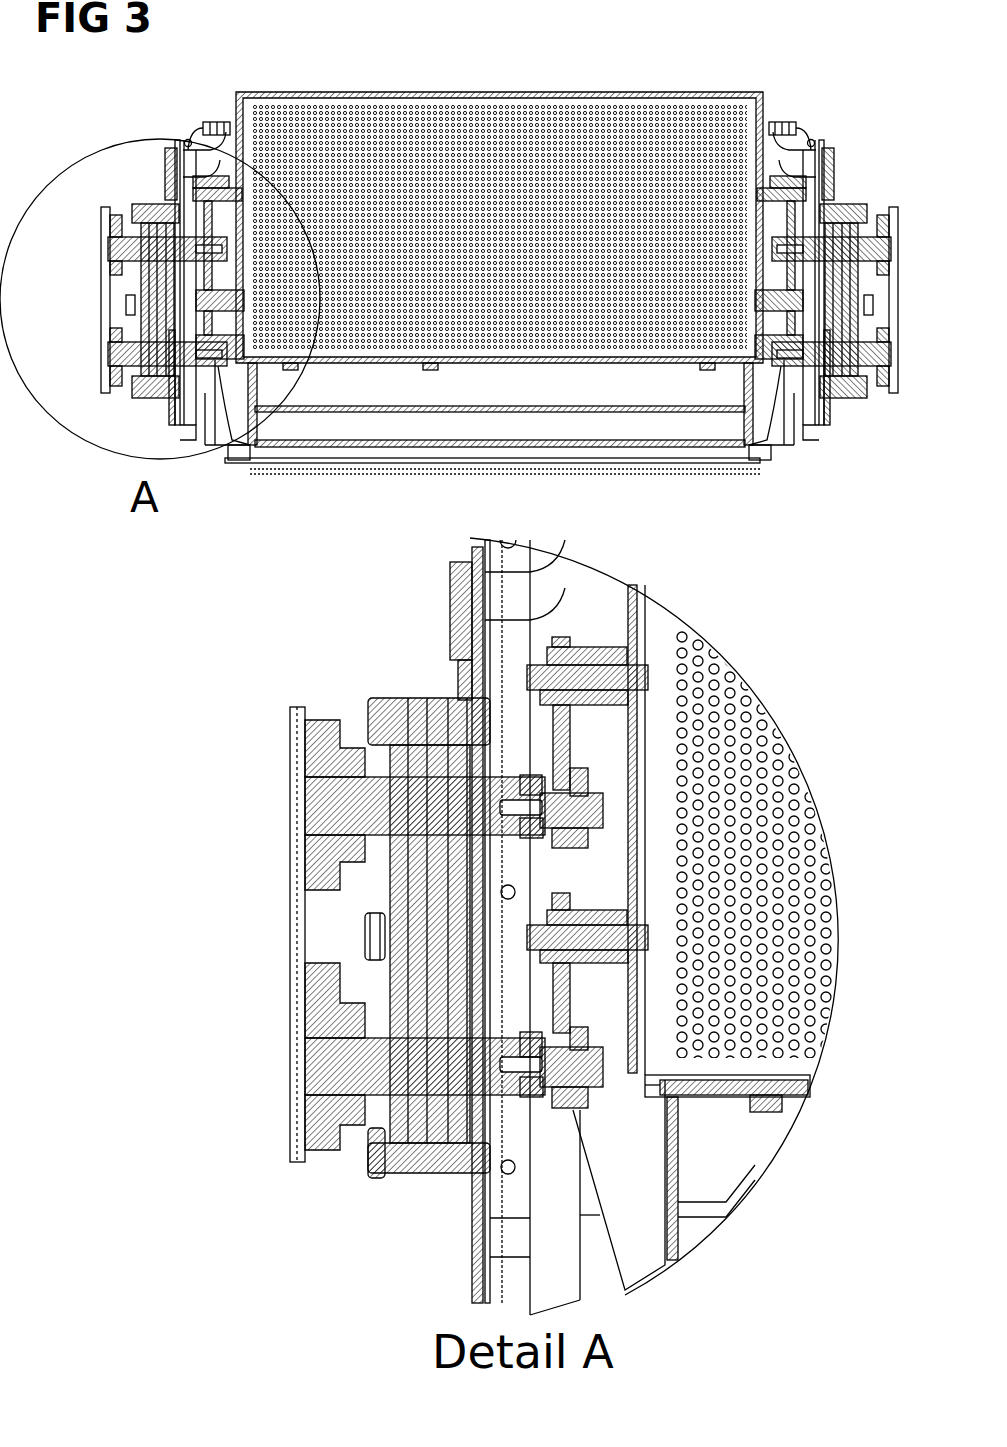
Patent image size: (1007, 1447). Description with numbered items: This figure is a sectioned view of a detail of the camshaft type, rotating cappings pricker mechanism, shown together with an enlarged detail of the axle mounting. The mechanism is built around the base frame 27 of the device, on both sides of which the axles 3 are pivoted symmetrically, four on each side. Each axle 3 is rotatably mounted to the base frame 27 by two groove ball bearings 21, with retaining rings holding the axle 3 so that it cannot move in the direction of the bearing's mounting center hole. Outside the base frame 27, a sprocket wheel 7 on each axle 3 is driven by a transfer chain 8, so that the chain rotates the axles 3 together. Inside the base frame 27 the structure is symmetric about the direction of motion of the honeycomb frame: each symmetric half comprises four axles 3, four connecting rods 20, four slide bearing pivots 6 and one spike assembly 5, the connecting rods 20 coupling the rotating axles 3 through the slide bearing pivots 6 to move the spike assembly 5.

The axle 3 is at (440, 860).
The spike assembly 5 is at (663, 650).
The slide bearing pivot 6 is at (545, 700).
The sprocket wheel 7 is at (372, 812).
The transfer chain 8 is at (420, 905).
The connecting rod 20 is at (565, 1000).
The groove ball bearing 21 is at (430, 745).
The base frame 27 is at (476, 1232).